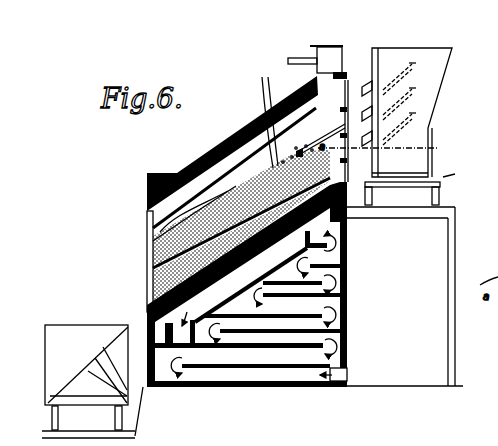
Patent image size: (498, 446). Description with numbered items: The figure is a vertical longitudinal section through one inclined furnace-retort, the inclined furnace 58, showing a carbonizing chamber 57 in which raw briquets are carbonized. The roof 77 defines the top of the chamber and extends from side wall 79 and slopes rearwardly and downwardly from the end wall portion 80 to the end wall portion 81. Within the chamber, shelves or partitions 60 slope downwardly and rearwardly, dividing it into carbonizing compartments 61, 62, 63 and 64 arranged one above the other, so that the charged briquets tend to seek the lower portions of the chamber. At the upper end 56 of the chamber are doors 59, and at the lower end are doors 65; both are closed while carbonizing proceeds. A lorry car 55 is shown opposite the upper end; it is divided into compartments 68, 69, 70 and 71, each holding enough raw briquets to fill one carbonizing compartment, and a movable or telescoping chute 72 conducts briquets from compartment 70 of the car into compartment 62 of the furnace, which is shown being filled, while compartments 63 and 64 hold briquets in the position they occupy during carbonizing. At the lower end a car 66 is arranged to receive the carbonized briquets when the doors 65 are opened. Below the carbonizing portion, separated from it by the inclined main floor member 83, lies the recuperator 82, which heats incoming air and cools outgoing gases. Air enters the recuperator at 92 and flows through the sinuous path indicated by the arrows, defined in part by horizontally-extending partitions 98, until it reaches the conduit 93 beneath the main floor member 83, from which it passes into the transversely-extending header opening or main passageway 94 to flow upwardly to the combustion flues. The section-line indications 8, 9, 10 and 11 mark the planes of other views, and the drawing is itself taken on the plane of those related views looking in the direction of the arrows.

The section line 9 is at (326, 73).
The section line 10 is at (163, 163).
The section line 11 is at (230, 127).
The section line 8 is at (443, 128).
The lorry car 55 is at (413, 47).
The upper end 56 is at (349, 170).
The carbonizing chamber 57 is at (289, 60).
The inclined furnace 58 is at (147, 216).
The doors 59 is at (368, 168).
The shelves or partitions 60 is at (147, 223).
The carbonizing compartment 61 is at (234, 168).
The carbonizing compartment 62 is at (233, 193).
The carbonizing compartment 63 is at (241, 210).
The carbonizing compartment 64 is at (241, 243).
The doors 65 is at (147, 277).
The car 66 is at (72, 333).
The compartment 68 is at (380, 137).
The compartment 69 is at (340, 127).
The compartment 70 is at (385, 90).
The compartment 71 is at (388, 62).
The movable or telescoping chute 72 is at (360, 112).
The roof 77 is at (217, 145).
The side wall 79 is at (447, 442).
The end wall portion 80 is at (347, 300).
The end wall portion 81 is at (147, 189).
The recuperator 82 is at (298, 323).
The main floor member 83 is at (251, 285).
The air inlet 92 is at (347, 373).
The conduit 93 is at (312, 253).
The header opening or main passageway 94 is at (147, 333).
The horizontally-extending partitions 98 is at (296, 336).